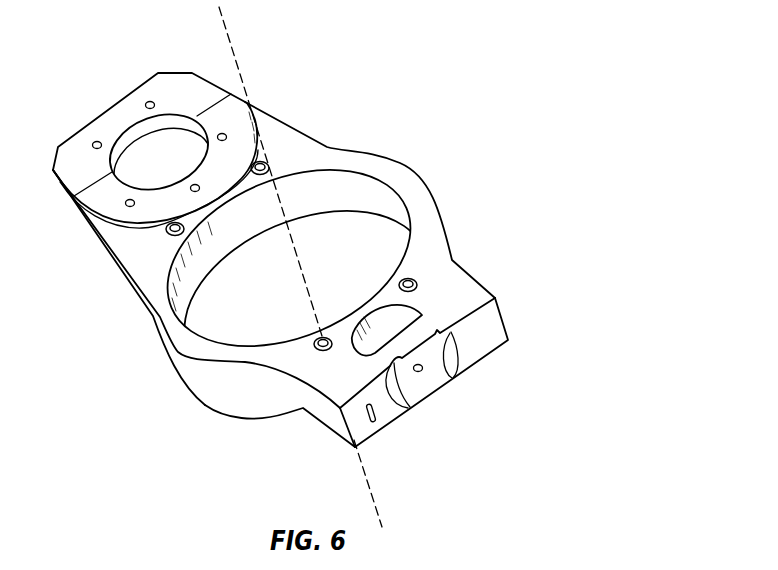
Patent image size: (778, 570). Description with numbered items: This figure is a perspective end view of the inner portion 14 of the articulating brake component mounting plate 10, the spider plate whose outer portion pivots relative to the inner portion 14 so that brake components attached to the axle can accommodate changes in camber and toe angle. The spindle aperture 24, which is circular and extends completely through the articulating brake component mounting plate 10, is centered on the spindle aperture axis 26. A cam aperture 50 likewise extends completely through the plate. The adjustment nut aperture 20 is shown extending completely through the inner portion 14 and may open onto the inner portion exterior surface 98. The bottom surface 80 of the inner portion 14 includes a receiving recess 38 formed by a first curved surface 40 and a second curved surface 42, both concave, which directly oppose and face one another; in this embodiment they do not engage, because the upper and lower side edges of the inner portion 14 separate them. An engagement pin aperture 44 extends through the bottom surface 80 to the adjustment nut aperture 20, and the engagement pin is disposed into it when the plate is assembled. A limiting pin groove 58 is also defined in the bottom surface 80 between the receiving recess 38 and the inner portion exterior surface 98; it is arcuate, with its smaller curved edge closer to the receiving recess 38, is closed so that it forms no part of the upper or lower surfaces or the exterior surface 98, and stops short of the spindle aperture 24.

The articulating brake component mounting plate 10 is at (308, 267).
The inner portion 14 is at (125, 245).
The adjustment nut aperture 20 is at (452, 275).
The spindle aperture 24 is at (327, 228).
The spindle aperture axis 26 is at (230, 43).
The receiving recess 38 is at (431, 396).
The first curved surface 40 is at (393, 373).
The second curved surface 42 is at (448, 379).
The engagement pin aperture 44 is at (481, 336).
The cam aperture 50 is at (140, 157).
The limiting pin groove 58 is at (375, 424).
The bottom surface 80 is at (494, 349).
The inner portion exterior surface 98 is at (212, 387).